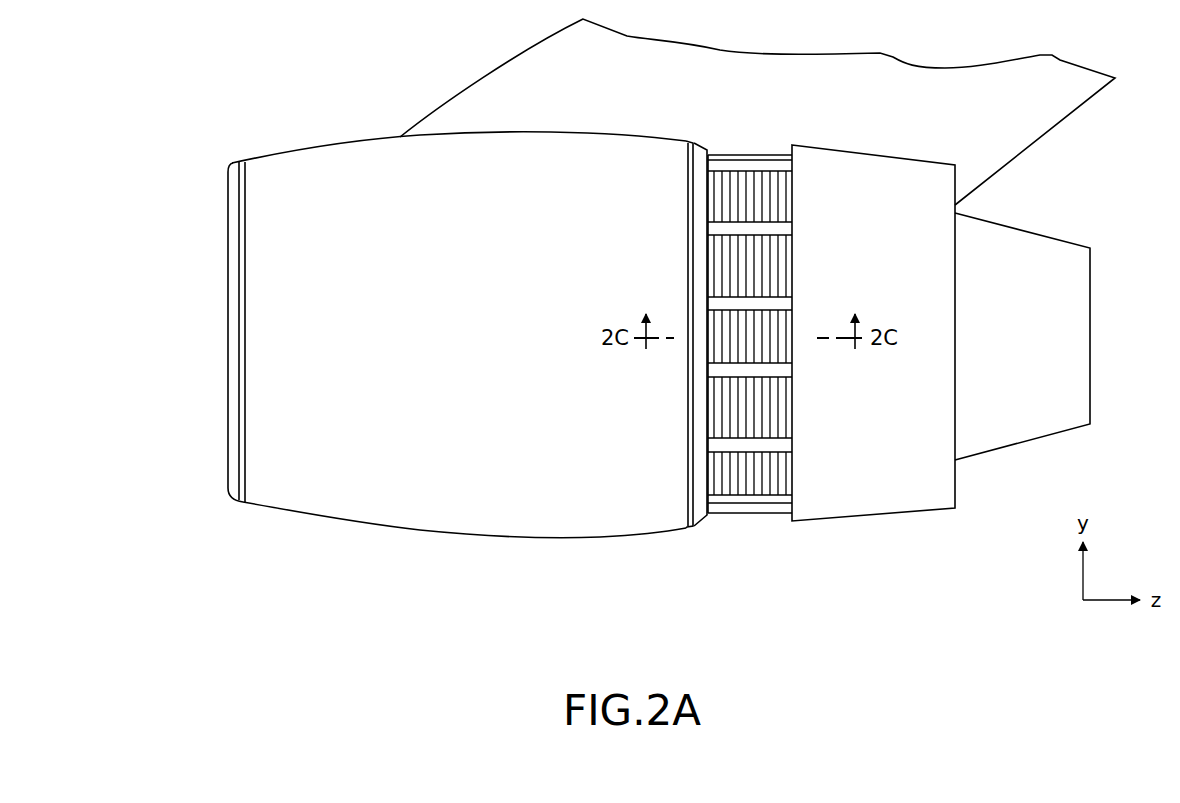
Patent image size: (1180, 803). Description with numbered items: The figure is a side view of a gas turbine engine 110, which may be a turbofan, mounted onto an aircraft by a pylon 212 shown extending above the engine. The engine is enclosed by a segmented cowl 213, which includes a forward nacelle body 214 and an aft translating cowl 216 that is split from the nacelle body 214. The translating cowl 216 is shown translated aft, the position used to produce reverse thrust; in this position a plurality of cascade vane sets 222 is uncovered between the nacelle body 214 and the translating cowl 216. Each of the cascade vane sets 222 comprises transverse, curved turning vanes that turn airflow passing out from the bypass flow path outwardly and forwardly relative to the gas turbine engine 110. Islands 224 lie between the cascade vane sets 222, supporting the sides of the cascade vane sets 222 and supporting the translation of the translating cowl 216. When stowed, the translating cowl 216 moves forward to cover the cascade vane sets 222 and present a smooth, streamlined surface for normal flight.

The gas turbine engine 110 is at (352, 88).
The pylon 212 is at (868, 117).
The segmented cowl 213 is at (705, 533).
The nacelle body 214 is at (579, 537).
The translating cowl 216 is at (850, 521).
The cascade vane sets 222 is at (733, 408).
The islands 224 is at (758, 230).